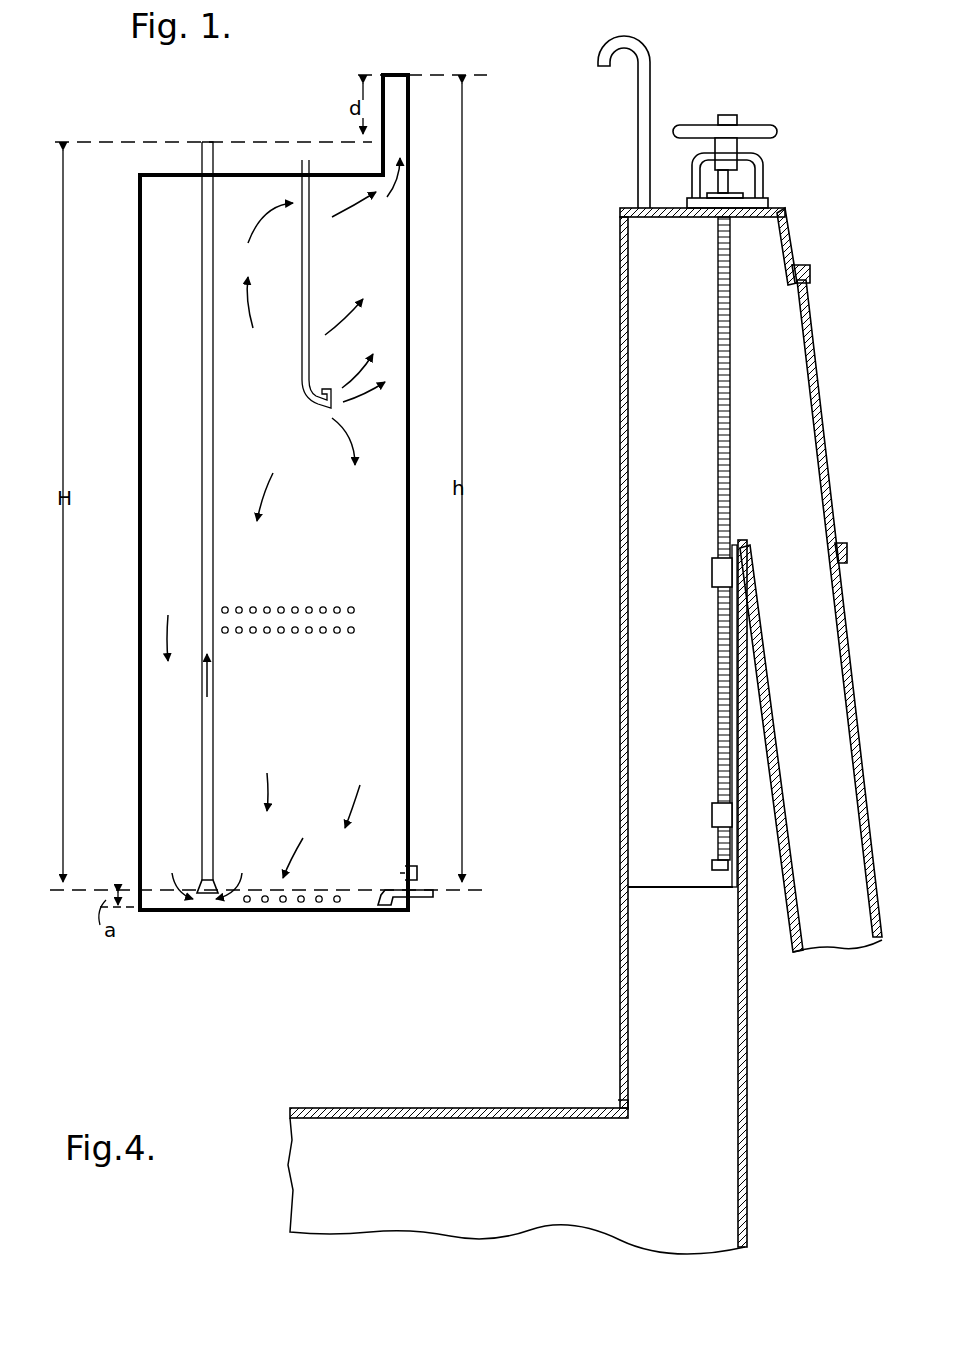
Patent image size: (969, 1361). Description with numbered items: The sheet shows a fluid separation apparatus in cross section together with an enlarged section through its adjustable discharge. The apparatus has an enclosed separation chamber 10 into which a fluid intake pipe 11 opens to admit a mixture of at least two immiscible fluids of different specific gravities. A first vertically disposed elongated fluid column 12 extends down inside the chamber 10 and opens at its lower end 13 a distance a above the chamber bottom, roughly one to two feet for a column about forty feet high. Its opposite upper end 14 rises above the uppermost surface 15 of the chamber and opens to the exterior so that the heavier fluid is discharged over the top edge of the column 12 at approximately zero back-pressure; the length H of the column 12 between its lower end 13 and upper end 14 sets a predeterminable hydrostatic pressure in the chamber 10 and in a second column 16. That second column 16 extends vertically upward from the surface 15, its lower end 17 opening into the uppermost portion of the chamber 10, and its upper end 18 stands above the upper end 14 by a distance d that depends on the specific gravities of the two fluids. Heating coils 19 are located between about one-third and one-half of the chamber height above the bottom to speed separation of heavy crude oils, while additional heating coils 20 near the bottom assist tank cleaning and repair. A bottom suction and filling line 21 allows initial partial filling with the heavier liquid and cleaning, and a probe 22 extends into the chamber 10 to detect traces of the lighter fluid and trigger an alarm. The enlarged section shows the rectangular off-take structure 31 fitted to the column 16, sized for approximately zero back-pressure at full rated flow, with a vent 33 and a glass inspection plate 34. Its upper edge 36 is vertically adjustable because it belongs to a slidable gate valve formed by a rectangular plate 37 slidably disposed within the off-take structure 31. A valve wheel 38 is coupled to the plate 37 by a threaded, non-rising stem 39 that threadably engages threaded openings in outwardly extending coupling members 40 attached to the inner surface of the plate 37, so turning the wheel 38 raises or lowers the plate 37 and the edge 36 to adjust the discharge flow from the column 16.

In FIG. 1, the separation chamber 10 is at (307, 524).
In FIG. 4, the separation chamber 10 is at (476, 1183).
In FIG. 1, the fluid intake pipe 11 is at (311, 262).
In FIG. 1, the first fluid column 12 is at (214, 440).
In FIG. 1, the lower end of first column 13 is at (205, 897).
In FIG. 1, the upper end of first column 14 is at (222, 150).
In FIG. 1, the uppermost surface of chamber 15 is at (264, 174).
In FIG. 4, the uppermost surface of chamber 15 is at (376, 1107).
In FIG. 1, the second column 16 is at (410, 148).
In FIG. 4, the second column 16 is at (618, 983).
In FIG. 1, the lower end of second column 17 is at (380, 172).
In FIG. 4, the lower end of second column 17 is at (598, 1093).
In FIG. 1, the upper end of second column 18 is at (404, 75).
In FIG. 1, the heating coils 19 is at (310, 607).
In FIG. 1, the additional heating coils 20 is at (302, 896).
In FIG. 1, the bottom suction and filling line 21 is at (420, 905).
In FIG. 1, the probe 22 is at (412, 866).
In FIG. 4, the off-take structure 31 is at (802, 241).
In FIG. 4, the vent 33 is at (652, 66).
In FIG. 4, the glass inspection plate 34 is at (832, 478).
In FIG. 4, the upper edge 36 is at (744, 541).
In FIG. 4, the rectangular plate 37 is at (732, 745).
In FIG. 4, the valve wheel 38 is at (768, 128).
In FIG. 4, the threaded non-rising stem 39 is at (732, 394).
In FIG. 4, the coupling members 40 is at (712, 572).